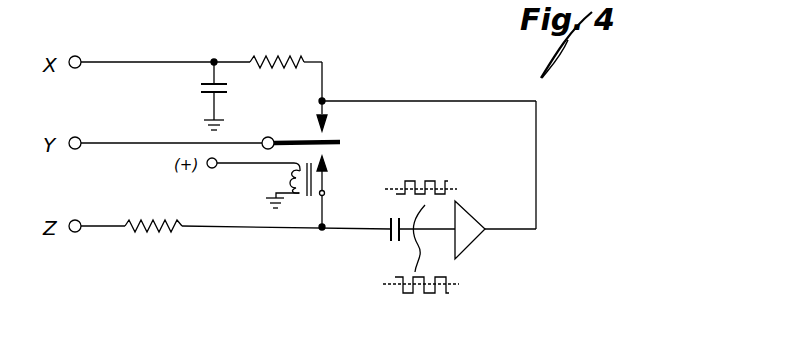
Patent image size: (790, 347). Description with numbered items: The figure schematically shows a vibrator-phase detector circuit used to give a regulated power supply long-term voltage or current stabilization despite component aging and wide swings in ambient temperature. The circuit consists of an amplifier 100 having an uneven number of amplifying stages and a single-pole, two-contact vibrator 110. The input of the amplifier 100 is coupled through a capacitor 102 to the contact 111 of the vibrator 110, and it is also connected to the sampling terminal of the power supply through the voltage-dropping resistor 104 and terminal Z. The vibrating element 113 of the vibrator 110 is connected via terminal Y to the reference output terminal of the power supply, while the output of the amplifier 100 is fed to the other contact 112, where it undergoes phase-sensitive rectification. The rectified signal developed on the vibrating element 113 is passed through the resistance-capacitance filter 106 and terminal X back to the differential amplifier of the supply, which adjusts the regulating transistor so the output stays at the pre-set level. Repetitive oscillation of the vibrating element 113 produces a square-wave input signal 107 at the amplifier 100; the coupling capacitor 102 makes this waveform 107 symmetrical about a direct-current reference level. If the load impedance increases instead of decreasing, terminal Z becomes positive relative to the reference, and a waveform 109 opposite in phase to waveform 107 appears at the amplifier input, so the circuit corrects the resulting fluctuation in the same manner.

The amplifier 100 is at (466, 236).
The capacitor 102 is at (389, 238).
The voltage-dropping resistor 104 is at (143, 222).
The resistance-capacitance filter 106 is at (286, 109).
The square-wave input signal 107 is at (431, 183).
The waveform 109 is at (442, 291).
The vibrator 110 is at (370, 196).
The contact 111 is at (327, 164).
The contact 112 is at (327, 125).
The vibrating element 113 is at (344, 143).